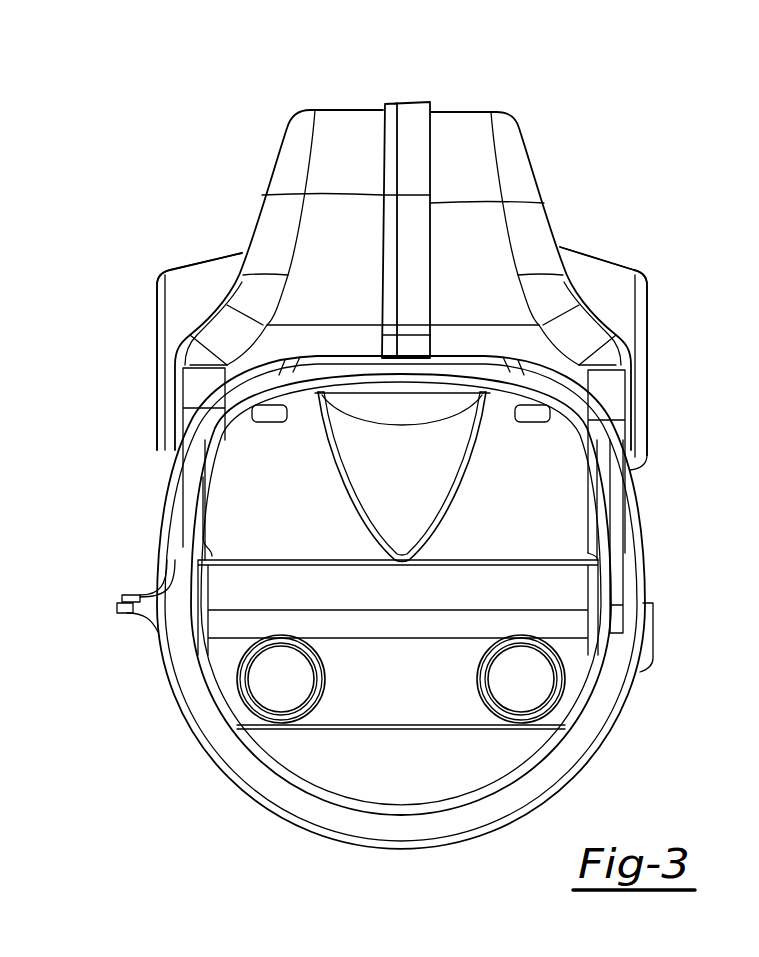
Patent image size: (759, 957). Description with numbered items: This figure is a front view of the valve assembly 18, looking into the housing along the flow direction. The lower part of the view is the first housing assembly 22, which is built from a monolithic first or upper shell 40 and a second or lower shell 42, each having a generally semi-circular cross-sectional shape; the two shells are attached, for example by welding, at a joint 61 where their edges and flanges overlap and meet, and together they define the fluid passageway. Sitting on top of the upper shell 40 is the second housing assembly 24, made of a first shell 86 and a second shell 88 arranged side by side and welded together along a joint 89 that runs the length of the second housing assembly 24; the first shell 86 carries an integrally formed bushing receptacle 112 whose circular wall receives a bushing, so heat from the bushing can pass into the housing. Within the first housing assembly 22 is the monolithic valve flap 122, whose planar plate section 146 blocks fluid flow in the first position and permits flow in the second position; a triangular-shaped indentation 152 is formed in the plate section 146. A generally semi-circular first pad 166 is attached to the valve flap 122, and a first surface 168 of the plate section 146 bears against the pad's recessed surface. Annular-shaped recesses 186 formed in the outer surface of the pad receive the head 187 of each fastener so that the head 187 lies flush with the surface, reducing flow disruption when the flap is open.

The valve assembly 18 is at (557, 92).
The first housing assembly 22 is at (645, 583).
The second housing assembly 24 is at (548, 168).
The first or upper shell 40 is at (157, 550).
The second or lower shell 42 is at (187, 713).
The joint 61 is at (117, 597).
The first shell 86 is at (457, 157).
The second shell 88 is at (342, 152).
The joint 89 is at (424, 98).
The bushing receptacle 112 is at (166, 277).
The valve flap 122 is at (538, 496).
The plate section 146 is at (552, 532).
The triangular-shaped indentation 152 is at (380, 502).
The first pad 166 is at (330, 778).
The first surface of the plate section 168 is at (243, 471).
The annular-shaped recesses 186 is at (477, 692).
The head 187 is at (281, 672).